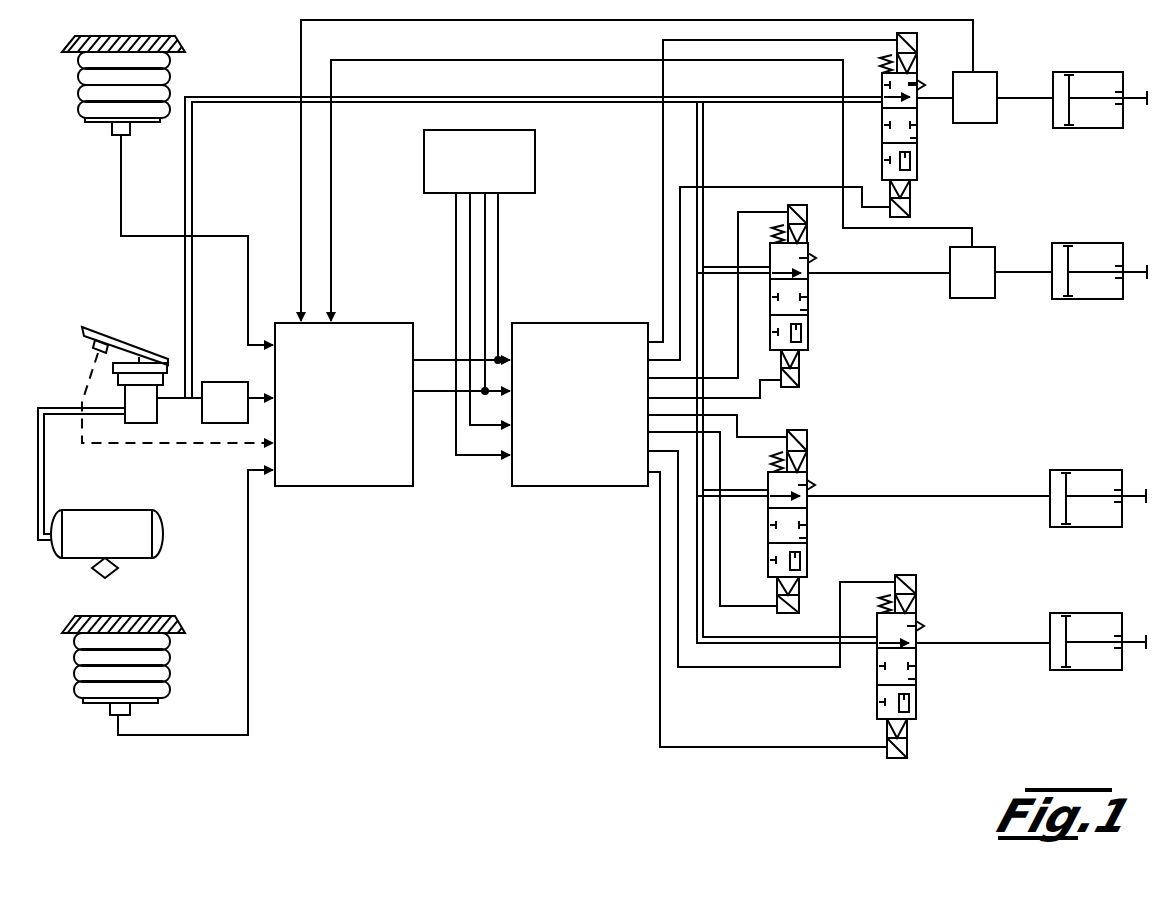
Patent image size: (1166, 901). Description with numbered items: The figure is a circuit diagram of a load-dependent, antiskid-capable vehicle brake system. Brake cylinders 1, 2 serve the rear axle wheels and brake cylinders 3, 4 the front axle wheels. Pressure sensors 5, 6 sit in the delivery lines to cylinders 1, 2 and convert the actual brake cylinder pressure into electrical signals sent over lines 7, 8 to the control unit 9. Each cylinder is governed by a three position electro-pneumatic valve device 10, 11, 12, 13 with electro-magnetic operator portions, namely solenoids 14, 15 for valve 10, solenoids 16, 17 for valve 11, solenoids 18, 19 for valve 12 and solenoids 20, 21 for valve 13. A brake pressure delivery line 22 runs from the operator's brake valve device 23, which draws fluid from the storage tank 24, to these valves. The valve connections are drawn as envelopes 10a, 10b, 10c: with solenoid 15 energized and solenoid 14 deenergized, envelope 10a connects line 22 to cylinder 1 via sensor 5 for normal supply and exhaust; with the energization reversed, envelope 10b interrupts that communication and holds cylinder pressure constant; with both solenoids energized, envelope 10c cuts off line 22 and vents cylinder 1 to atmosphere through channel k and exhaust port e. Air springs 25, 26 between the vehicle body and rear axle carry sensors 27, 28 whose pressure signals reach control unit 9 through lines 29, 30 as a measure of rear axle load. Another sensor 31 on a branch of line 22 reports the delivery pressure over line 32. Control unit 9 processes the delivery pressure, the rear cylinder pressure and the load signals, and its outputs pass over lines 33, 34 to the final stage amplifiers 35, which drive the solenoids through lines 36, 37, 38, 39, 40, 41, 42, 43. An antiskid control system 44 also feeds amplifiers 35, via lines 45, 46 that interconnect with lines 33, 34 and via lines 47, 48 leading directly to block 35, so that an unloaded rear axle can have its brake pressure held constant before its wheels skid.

The brake cylinder 1 is at (1101, 78).
The brake cylinder 2 is at (1100, 255).
The brake cylinder 3 is at (1096, 481).
The brake cylinder 4 is at (1096, 623).
The pressure sensor 5 is at (990, 73).
The pressure sensor 6 is at (987, 247).
The line 7 is at (301, 138).
The line 8 is at (331, 160).
The control unit 9 is at (340, 487).
The three position electro-pneumatic valve device 10 is at (905, 122).
The envelope 10a is at (882, 83).
The envelope 10b is at (882, 120).
The envelope 10c is at (882, 157).
The three position electro-pneumatic valve device 11 is at (811, 297).
The three position electro-pneumatic valve device 12 is at (810, 523).
The three position electro-pneumatic valve device 13 is at (919, 666).
The solenoid operator 14 is at (917, 43).
The solenoid operator 15 is at (910, 208).
The solenoid operator 16 is at (807, 214).
The solenoid operator 17 is at (799, 378).
The solenoid operator 18 is at (807, 443).
The solenoid operator 19 is at (799, 605).
The solenoid operator 20 is at (916, 583).
The solenoid operator 21 is at (907, 750).
The brake pressure delivery line 22 is at (192, 212).
The operator's brake valve device 23 is at (156, 414).
The storage tank 24 is at (112, 520).
The air spring 25 is at (78, 90).
The air spring 26 is at (78, 657).
The sensor 27 is at (112, 131).
The sensor 28 is at (110, 711).
The line 29 is at (121, 222).
The line 30 is at (248, 622).
The sensor 31 is at (220, 382).
The line 32 is at (262, 398).
The line 33 is at (437, 360).
The line 34 is at (437, 392).
The final stage amplifiers 35 is at (576, 323).
The line 36 is at (663, 142).
The line 37 is at (751, 187).
The line 38 is at (738, 232).
The line 39 is at (760, 398).
The line 40 is at (760, 438).
The line 41 is at (720, 520).
The line 42 is at (710, 667).
The line 43 is at (660, 705).
The antiskid control system 44 is at (535, 131).
The line 45 is at (485, 228).
The line 46 is at (498, 252).
The line 47 is at (456, 240).
The line 48 is at (470, 217).
The exhaust port e is at (920, 85).
The channel k is at (917, 160).